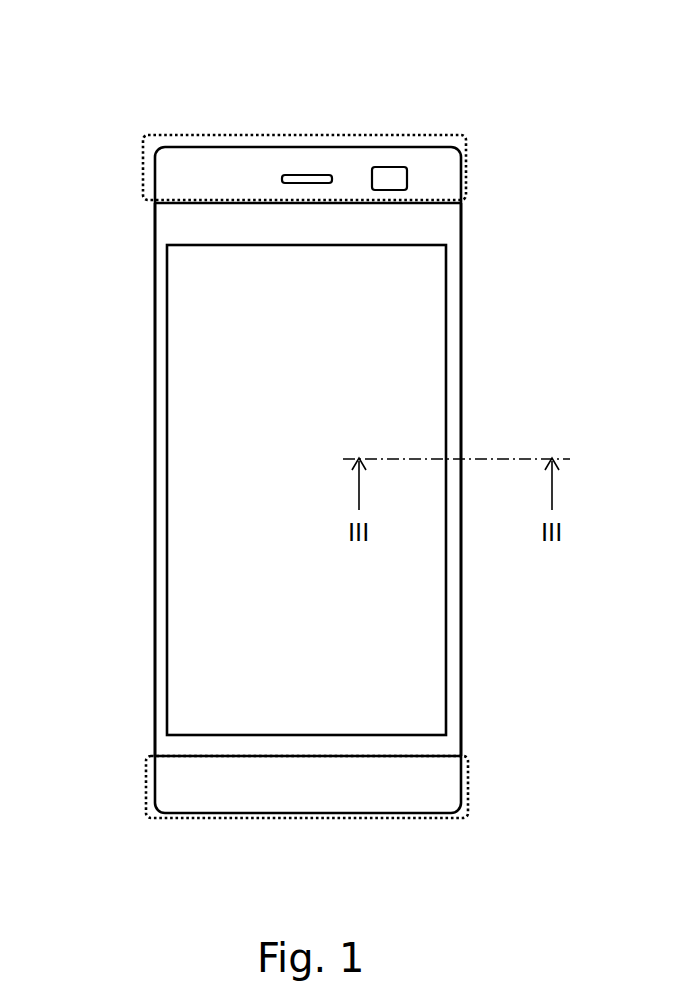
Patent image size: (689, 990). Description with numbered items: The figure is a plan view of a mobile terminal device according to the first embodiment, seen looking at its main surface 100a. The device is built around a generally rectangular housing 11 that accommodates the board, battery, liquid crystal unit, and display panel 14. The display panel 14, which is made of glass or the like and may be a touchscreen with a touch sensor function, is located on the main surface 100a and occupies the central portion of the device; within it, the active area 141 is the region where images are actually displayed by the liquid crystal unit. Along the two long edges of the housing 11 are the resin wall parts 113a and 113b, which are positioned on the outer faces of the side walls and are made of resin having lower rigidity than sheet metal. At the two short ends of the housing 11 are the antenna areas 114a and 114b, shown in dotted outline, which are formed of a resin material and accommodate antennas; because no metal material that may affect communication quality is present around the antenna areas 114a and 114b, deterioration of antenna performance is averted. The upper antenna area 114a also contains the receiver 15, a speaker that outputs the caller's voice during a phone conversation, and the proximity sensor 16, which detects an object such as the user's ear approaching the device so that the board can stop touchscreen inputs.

The main surface 100a is at (265, 444).
The housing 11 is at (445, 160).
The display panel 14 is at (430, 228).
The active area 141 is at (435, 295).
The receiver 15 is at (308, 178).
The proximity sensor 16 is at (388, 175).
The antenna area 114a is at (466, 168).
The antenna area 114b is at (468, 785).
The resin wall part 113a is at (462, 628).
The resin wall part 113b is at (155, 603).